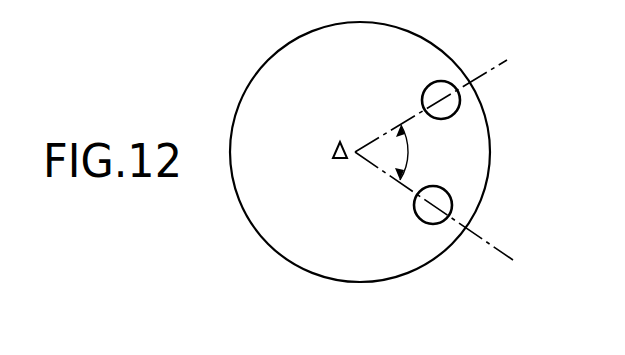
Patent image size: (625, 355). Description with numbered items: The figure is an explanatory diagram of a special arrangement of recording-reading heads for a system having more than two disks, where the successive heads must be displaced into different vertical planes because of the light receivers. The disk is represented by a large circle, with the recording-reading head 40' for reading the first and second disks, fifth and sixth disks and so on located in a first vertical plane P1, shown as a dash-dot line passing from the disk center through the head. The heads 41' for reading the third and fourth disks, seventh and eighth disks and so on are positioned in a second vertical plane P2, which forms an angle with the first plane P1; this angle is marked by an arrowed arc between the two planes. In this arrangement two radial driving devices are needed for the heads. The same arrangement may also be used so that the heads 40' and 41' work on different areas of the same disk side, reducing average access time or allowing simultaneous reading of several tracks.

The recording-reading head 40' is at (453, 74).
The recording-reading head 41' is at (469, 204).
The first vertical plane P1 is at (478, 80).
The second vertical plane P2 is at (485, 240).